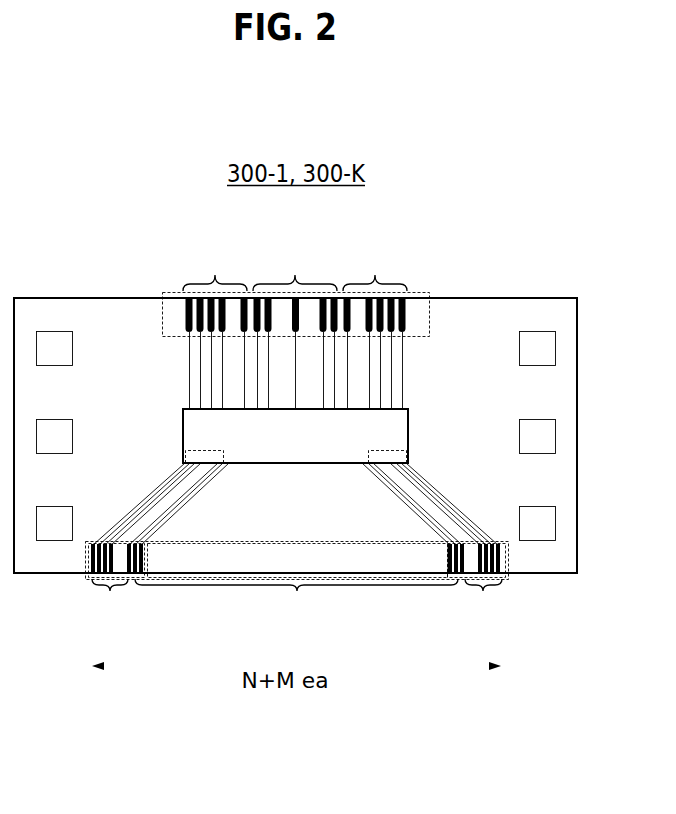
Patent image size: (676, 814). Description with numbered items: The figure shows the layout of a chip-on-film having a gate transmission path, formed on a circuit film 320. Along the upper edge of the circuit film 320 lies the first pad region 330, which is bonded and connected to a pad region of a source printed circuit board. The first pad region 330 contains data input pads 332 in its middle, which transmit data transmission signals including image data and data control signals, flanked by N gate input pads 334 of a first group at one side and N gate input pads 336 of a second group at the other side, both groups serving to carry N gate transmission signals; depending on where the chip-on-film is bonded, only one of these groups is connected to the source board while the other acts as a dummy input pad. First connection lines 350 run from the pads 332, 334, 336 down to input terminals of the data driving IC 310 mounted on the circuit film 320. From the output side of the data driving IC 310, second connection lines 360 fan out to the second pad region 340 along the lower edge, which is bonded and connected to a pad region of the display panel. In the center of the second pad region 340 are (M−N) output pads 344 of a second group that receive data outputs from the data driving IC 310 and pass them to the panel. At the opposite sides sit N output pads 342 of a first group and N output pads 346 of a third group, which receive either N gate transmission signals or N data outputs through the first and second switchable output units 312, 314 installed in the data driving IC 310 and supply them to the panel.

The circuit film 320 is at (42, 297).
The first pad region 330 is at (321, 282).
The data input pads 332 is at (295, 289).
The gate input pads of a first group 334 is at (215, 279).
The gate input pads of a second group 336 is at (375, 279).
The first connection lines 350 is at (188, 397).
The data driving IC 310 is at (318, 448).
The first switchable output unit 312 is at (200, 458).
The second switchable output unit 314 is at (390, 458).
The second connection lines 360 is at (150, 497).
The second pad region 340 is at (269, 601).
The output pads of the first group 342 is at (117, 590).
The output pads of the second group 344 is at (296, 590).
The output pads of the third group 346 is at (477, 590).